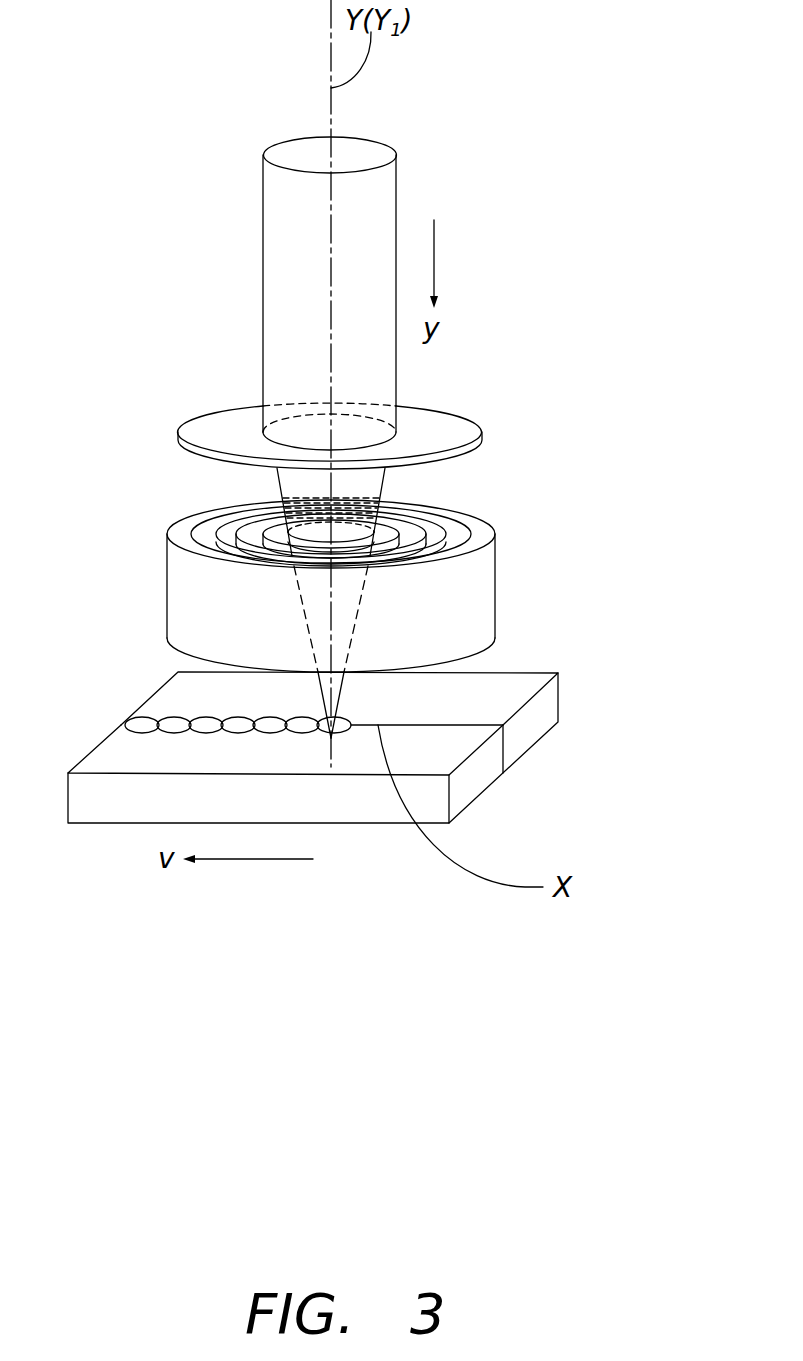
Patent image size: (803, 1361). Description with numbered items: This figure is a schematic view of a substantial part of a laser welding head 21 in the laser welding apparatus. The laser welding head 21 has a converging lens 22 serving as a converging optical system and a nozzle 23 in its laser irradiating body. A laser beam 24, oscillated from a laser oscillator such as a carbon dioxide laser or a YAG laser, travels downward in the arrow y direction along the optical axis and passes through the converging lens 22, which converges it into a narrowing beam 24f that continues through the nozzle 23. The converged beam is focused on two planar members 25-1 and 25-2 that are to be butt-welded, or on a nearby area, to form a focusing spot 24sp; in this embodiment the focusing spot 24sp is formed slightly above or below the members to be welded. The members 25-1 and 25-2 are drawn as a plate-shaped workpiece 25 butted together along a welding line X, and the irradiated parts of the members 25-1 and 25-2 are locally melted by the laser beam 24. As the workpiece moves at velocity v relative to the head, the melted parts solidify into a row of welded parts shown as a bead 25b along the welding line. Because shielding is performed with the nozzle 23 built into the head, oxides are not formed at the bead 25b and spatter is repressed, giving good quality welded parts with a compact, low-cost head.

The laser welding head 21 is at (487, 500).
The converging lens 22 is at (443, 408).
The nozzle 23 is at (498, 587).
The laser beam 24 is at (385, 207).
The focused laser beam 24f is at (302, 485).
The focusing spot 24sp is at (333, 745).
The workpiece 25 is at (105, 755).
The planer member 25-1 is at (440, 758).
The planer member 25-2 is at (507, 703).
The bead 25b is at (155, 720).